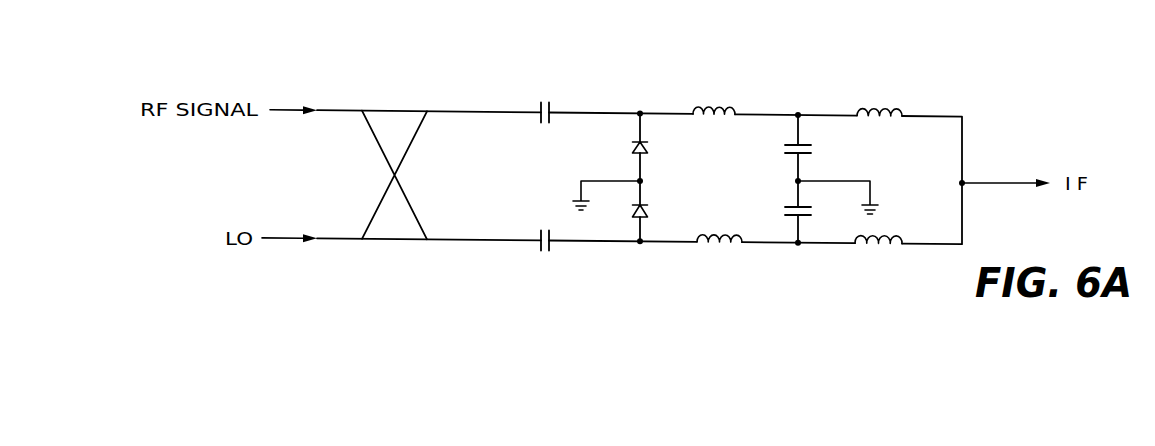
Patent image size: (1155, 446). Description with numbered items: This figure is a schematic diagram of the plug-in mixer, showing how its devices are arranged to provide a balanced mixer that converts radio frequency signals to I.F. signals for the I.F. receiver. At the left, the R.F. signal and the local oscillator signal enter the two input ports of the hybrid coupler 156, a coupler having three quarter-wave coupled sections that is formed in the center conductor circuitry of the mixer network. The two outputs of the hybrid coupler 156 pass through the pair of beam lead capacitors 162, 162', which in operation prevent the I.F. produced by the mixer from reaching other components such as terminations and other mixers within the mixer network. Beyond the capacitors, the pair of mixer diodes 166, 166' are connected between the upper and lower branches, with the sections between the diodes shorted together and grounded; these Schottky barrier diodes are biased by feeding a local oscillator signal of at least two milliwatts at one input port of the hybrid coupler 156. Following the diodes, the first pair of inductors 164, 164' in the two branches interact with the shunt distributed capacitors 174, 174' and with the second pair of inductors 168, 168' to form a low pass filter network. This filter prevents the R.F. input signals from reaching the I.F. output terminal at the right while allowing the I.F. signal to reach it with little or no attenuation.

The hybrid coupler 156 is at (405, 157).
The beam lead capacitor 162 is at (571, 95).
The beam lead capacitor 162' is at (574, 256).
The inductor of first pair 164 is at (739, 90).
The inductor of first pair 164' is at (723, 262).
The mixer diode 166 is at (670, 146).
The mixer diode 166' is at (672, 210).
The inductor of second pair 168 is at (897, 90).
The inductor of second pair 168' is at (882, 262).
The distributed capacitor 174 is at (828, 141).
The distributed capacitor 174' is at (771, 201).